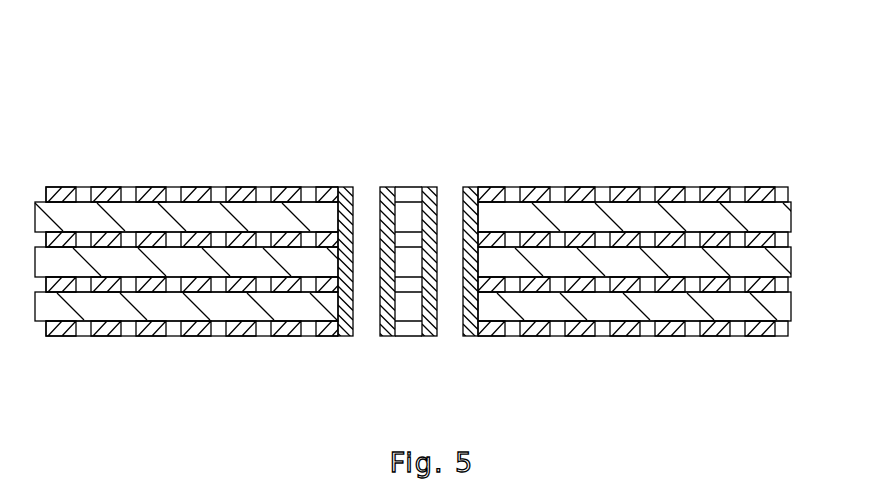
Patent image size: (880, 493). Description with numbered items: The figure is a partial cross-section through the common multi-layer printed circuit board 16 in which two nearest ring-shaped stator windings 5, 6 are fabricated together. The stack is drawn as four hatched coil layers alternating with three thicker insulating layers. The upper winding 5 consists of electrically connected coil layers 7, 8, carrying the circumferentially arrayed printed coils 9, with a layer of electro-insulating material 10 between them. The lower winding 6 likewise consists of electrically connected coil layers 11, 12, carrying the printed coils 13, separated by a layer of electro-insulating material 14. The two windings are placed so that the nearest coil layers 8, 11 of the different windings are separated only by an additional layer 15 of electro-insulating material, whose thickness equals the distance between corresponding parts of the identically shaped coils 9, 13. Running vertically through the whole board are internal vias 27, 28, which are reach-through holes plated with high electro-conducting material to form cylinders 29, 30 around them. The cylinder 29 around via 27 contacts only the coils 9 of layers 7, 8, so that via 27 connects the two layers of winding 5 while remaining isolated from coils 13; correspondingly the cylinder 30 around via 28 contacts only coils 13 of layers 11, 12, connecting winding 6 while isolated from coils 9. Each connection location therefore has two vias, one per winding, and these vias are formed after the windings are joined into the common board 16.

The ring-shaped winding 5 is at (262, 166).
The ring-shaped winding 6 is at (262, 353).
The coil layer 7 is at (583, 200).
The coil layer 8 is at (132, 245).
The printed coils 9 is at (223, 188).
The layer of electro-insulating material 10 is at (633, 220).
The coil layer 11 is at (123, 278).
The coil layer 12 is at (578, 328).
The printed coils 13 is at (233, 328).
The layer of electro-insulating material 14 is at (657, 305).
The additional layer of electro-insulating material 15 is at (680, 258).
The common multi-layer printed circuit board 16 is at (172, 113).
The internal via 27 is at (343, 187).
The internal via 28 is at (435, 187).
The cylinder of high electro-conducting material 29 is at (354, 314).
The cylinder of high electro-conducting material 30 is at (467, 303).